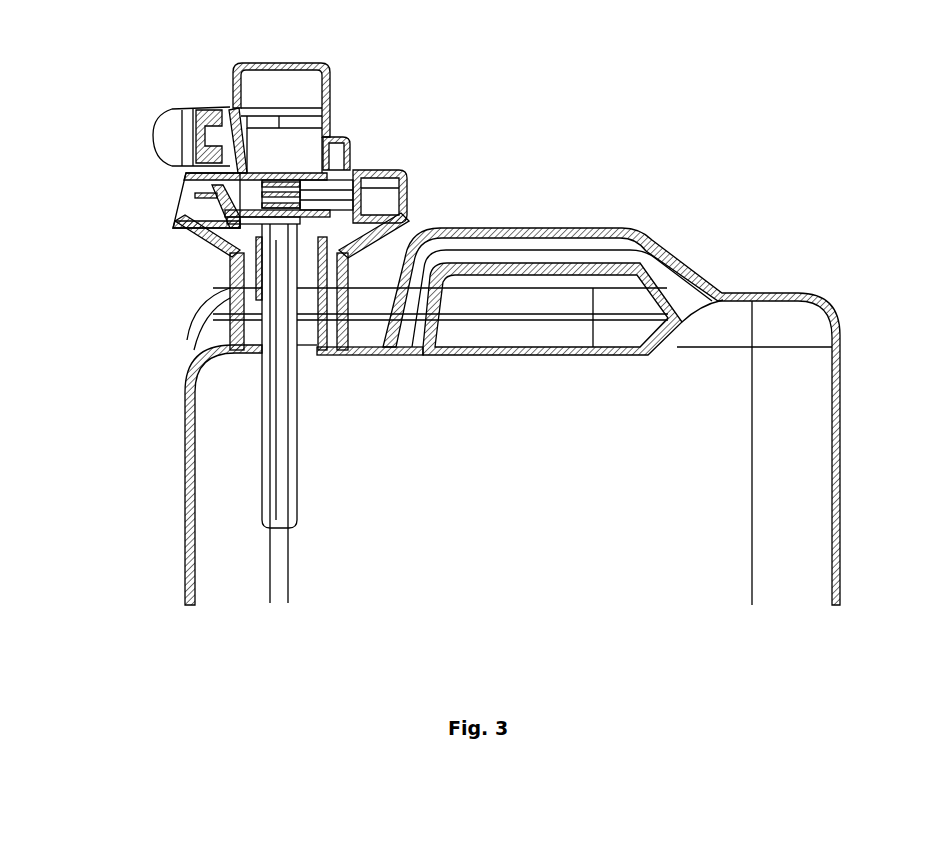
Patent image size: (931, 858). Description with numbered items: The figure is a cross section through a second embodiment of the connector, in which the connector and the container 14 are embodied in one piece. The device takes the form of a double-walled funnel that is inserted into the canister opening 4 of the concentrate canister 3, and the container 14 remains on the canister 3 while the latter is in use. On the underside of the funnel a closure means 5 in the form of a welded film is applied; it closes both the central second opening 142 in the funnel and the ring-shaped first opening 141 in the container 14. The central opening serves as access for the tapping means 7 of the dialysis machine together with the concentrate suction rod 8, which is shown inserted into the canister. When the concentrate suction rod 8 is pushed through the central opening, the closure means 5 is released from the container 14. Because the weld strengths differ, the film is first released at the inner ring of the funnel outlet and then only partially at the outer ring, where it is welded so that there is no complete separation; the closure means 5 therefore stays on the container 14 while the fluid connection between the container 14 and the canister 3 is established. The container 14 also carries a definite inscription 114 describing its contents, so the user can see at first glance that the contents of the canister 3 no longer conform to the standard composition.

The canister 3 is at (627, 236).
The canister opening 4 is at (230, 277).
The closure means 5 is at (380, 350).
The tapping means 7 is at (314, 34).
The concentrate suction rod 8 is at (262, 455).
The container 14 is at (400, 178).
The inscription 114 is at (178, 194).
The first opening 141 is at (232, 308).
The second opening 142 is at (262, 348).